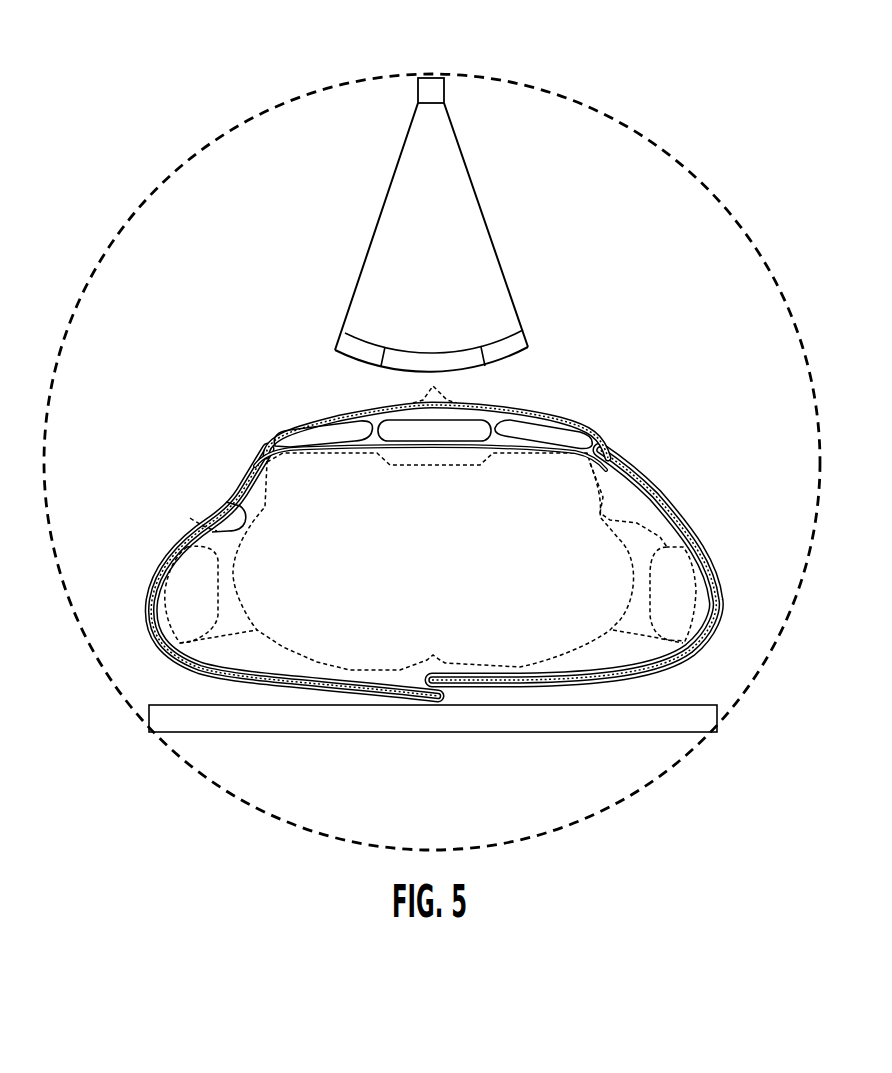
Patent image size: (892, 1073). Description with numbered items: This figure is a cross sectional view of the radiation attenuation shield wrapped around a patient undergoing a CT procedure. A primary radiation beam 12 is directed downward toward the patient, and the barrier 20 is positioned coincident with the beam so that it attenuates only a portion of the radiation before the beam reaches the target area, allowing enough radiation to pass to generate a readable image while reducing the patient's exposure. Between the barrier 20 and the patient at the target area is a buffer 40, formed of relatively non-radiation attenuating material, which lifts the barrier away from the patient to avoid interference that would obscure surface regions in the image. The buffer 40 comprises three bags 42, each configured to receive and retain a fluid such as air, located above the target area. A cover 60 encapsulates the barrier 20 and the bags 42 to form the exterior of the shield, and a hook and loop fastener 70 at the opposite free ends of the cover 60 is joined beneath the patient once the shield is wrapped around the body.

The primary radiation beam 12 is at (463, 158).
The barrier 20 is at (250, 457).
The buffer 40 is at (496, 424).
The bags 42 is at (285, 440).
The cover 60 is at (220, 498).
The hook and loop fastener 70 is at (452, 694).